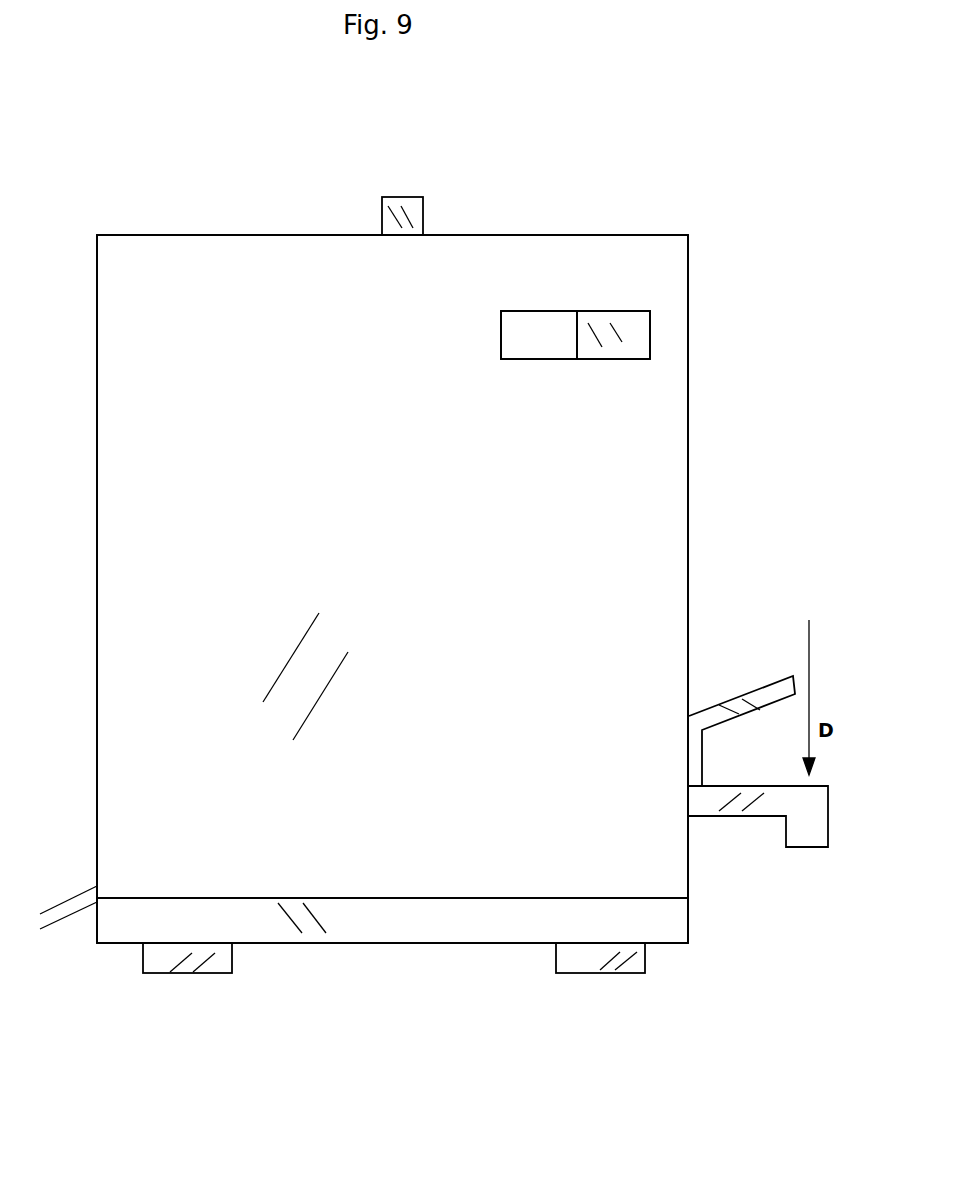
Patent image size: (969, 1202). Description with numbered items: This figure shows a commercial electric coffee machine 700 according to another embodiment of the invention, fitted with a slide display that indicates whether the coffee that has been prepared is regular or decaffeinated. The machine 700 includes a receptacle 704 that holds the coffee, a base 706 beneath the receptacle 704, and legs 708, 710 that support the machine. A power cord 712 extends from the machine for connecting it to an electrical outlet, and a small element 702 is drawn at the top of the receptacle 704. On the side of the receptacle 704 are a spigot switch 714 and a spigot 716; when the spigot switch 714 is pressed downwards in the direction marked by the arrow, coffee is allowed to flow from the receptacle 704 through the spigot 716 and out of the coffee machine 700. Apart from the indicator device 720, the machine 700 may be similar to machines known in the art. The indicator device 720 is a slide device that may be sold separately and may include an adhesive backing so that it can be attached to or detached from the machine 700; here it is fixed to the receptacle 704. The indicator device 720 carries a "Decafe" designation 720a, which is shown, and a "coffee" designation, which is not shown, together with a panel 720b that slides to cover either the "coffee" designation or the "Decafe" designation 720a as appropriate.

The commercial electric coffee machine 700 is at (560, 185).
The top indicator button 702 is at (410, 204).
The receptacle 704 is at (613, 499).
The base 706 is at (433, 913).
The leg 708 is at (153, 957).
The leg 710 is at (577, 960).
The power cord 712 is at (62, 900).
The spigot switch 714 is at (780, 690).
The spigot 716 is at (777, 803).
The indicator device 720 is at (610, 311).
The Decafe designation 720a is at (545, 311).
The panel 720b is at (650, 338).